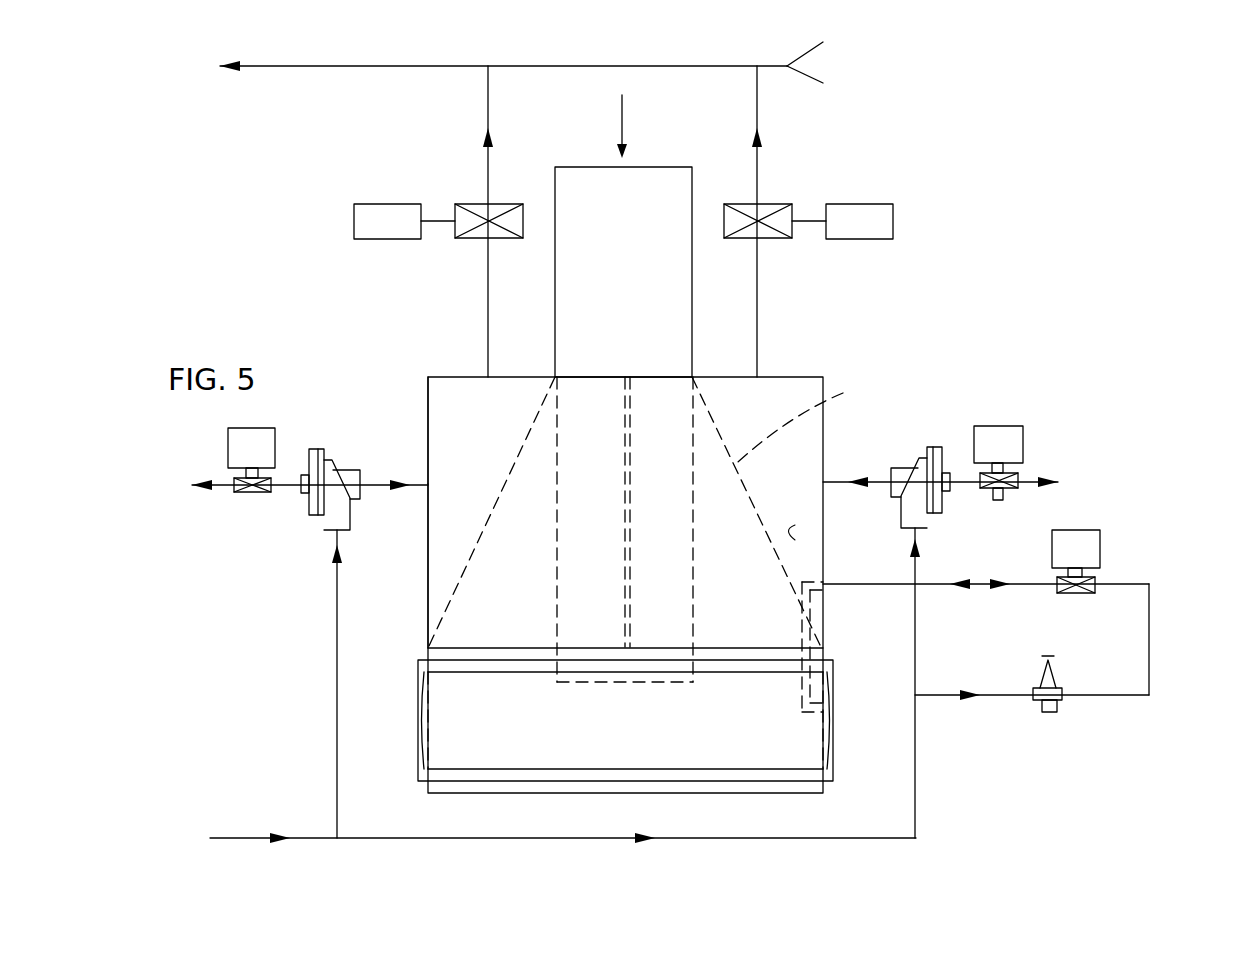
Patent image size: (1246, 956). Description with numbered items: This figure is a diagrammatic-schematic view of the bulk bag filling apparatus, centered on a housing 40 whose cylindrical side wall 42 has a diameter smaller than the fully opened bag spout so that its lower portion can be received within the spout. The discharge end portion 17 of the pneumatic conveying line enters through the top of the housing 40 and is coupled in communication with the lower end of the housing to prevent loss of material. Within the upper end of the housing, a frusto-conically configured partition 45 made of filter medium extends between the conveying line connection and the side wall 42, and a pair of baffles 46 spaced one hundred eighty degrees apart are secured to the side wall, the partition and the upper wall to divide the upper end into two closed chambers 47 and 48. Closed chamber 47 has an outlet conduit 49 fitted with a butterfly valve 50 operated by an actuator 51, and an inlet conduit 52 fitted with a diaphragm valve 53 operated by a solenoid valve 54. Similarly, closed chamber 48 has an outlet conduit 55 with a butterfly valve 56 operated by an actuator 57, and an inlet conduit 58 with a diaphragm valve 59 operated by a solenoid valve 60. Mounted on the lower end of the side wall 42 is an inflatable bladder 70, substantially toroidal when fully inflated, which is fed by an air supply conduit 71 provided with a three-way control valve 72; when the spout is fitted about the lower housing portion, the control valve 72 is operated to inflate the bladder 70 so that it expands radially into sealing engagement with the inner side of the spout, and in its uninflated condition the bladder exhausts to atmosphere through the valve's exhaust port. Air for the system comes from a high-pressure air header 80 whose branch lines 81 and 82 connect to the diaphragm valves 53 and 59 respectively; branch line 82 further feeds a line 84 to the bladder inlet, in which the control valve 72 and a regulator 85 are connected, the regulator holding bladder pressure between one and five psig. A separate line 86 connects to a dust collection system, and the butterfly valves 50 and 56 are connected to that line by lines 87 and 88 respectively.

The discharge end portion 17 is at (692, 296).
The housing 40 is at (840, 419).
The cylindrical side wall 42 is at (428, 402).
The frusto-conically configured partition 45 is at (845, 393).
The baffles 46 is at (632, 580).
The closed chamber 47 is at (428, 557).
The closed chamber 48 is at (797, 524).
The outlet conduit 49 is at (488, 320).
The butterfly valve 50 is at (468, 240).
The actuator 51 is at (354, 230).
The inlet conduit 52 is at (390, 478).
The diaphragm valve 53 is at (318, 520).
The solenoid valve 54 is at (228, 448).
The outlet conduit 55 is at (757, 322).
The butterfly valve 56 is at (776, 240).
The actuator 57 is at (893, 220).
The inlet conduit 58 is at (870, 478).
The diaphragm valve 59 is at (942, 508).
The solenoid valve 60 is at (1023, 445).
The inflatable bladder 70 is at (462, 722).
The air supply conduit 71 is at (868, 585).
The three-way control valve 72 is at (1100, 552).
The high-pressure air header 80 is at (560, 842).
The branch line 81 is at (335, 660).
The branch line 82 is at (918, 752).
The line 84 is at (1149, 628).
The regulator 85 is at (1062, 702).
The line 86 is at (585, 60).
The line 87 is at (480, 138).
The line 88 is at (762, 148).